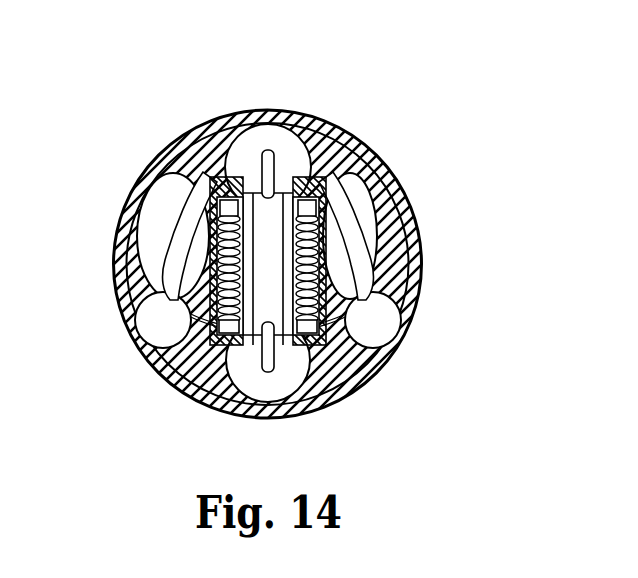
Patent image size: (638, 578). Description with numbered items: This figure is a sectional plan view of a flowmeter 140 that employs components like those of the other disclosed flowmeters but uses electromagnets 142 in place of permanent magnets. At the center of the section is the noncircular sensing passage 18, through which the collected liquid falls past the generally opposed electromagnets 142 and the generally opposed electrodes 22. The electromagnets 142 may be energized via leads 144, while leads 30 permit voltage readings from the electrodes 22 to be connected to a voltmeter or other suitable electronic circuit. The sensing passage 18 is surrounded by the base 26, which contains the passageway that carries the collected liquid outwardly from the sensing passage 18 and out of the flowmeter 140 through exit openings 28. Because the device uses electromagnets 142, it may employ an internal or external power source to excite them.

The flowmeter 140 is at (382, 108).
The base 26 is at (420, 233).
The exit openings 28 is at (384, 312).
The electromagnets 142 is at (386, 176).
The leads 144 is at (160, 340).
The sensing passage 18 is at (224, 350).
The leads 30 is at (280, 150).
The electrodes 22 is at (212, 173).